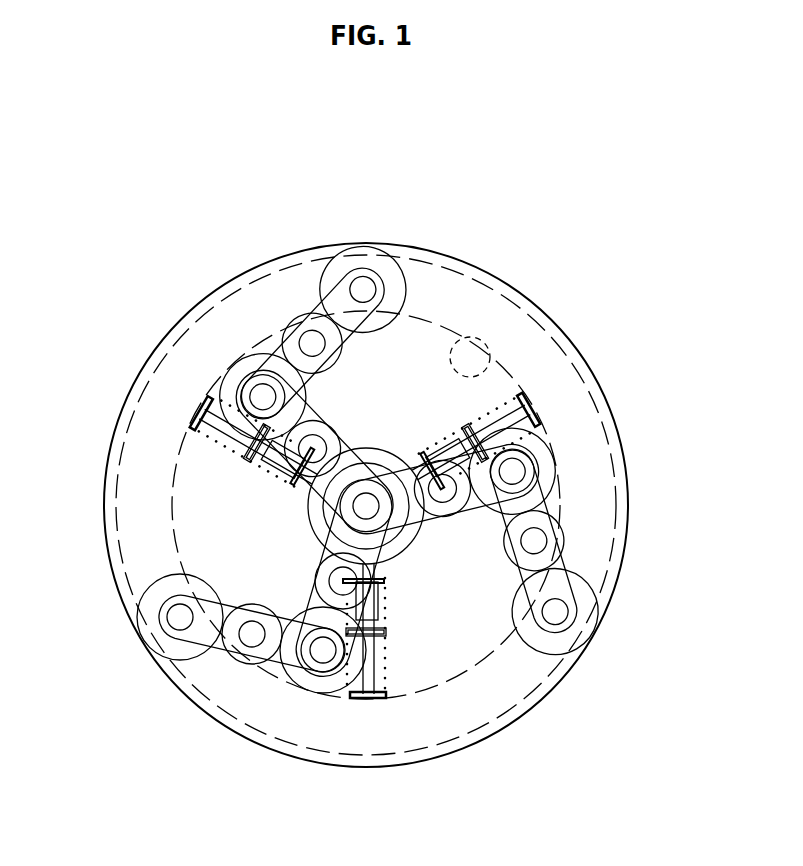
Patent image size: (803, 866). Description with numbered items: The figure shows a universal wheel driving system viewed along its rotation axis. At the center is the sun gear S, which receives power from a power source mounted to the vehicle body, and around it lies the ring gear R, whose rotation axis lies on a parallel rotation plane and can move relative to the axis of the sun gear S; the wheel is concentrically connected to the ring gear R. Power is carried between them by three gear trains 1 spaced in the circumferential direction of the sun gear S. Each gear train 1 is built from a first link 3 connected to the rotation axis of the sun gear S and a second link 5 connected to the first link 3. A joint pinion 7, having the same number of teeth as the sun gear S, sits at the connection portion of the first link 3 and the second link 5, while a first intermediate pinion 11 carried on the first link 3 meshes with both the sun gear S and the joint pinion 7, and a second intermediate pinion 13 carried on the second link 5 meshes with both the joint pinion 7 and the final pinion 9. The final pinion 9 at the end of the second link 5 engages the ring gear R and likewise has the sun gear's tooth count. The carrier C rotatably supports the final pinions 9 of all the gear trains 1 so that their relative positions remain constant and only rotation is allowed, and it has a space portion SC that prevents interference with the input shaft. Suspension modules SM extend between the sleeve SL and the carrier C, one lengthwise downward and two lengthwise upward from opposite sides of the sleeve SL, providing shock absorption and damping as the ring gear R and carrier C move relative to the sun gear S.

The gear train 1 is at (241, 356).
The first link 3 is at (473, 507).
The second link 5 is at (288, 327).
The joint pinion 7 is at (224, 388).
The final pinion 9 is at (338, 260).
The first intermediate pinion 11 is at (333, 420).
The second intermediate pinion 13 is at (284, 328).
The sun gear S is at (330, 510).
The sleeve SL is at (400, 543).
The suspension module SM is at (193, 419).
The carrier C is at (580, 352).
The ring gear R is at (558, 327).
The space portion SC is at (490, 352).